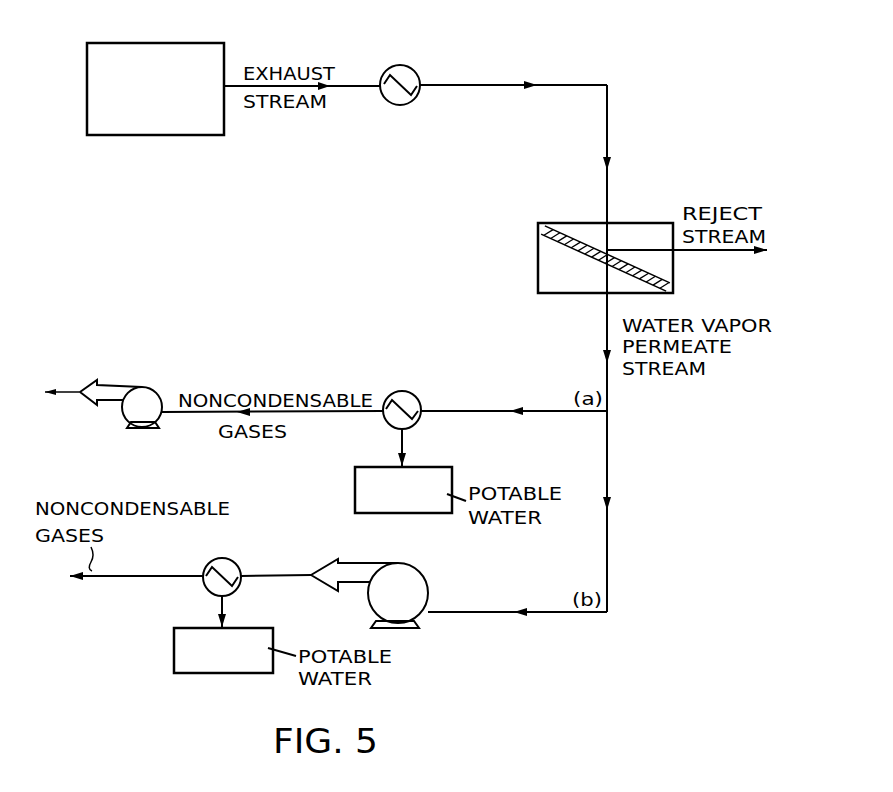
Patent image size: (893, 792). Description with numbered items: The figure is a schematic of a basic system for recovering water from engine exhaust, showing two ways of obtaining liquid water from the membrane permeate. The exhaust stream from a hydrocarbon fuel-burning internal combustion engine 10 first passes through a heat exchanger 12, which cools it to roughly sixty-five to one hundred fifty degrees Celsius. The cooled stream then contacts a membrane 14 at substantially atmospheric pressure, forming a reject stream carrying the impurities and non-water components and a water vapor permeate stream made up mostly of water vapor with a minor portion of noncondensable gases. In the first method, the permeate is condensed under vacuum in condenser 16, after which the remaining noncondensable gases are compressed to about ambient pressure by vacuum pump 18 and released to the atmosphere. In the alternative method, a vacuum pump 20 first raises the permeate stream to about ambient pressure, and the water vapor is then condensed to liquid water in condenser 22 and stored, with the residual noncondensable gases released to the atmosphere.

The internal combustion engine 10 is at (126, 40).
The heat exchanger 12 is at (402, 63).
The membrane 14 is at (540, 224).
The condenser 16 is at (424, 400).
The vacuum pump 18 is at (156, 388).
The vacuum pump 20 is at (428, 585).
The condenser 22 is at (243, 565).